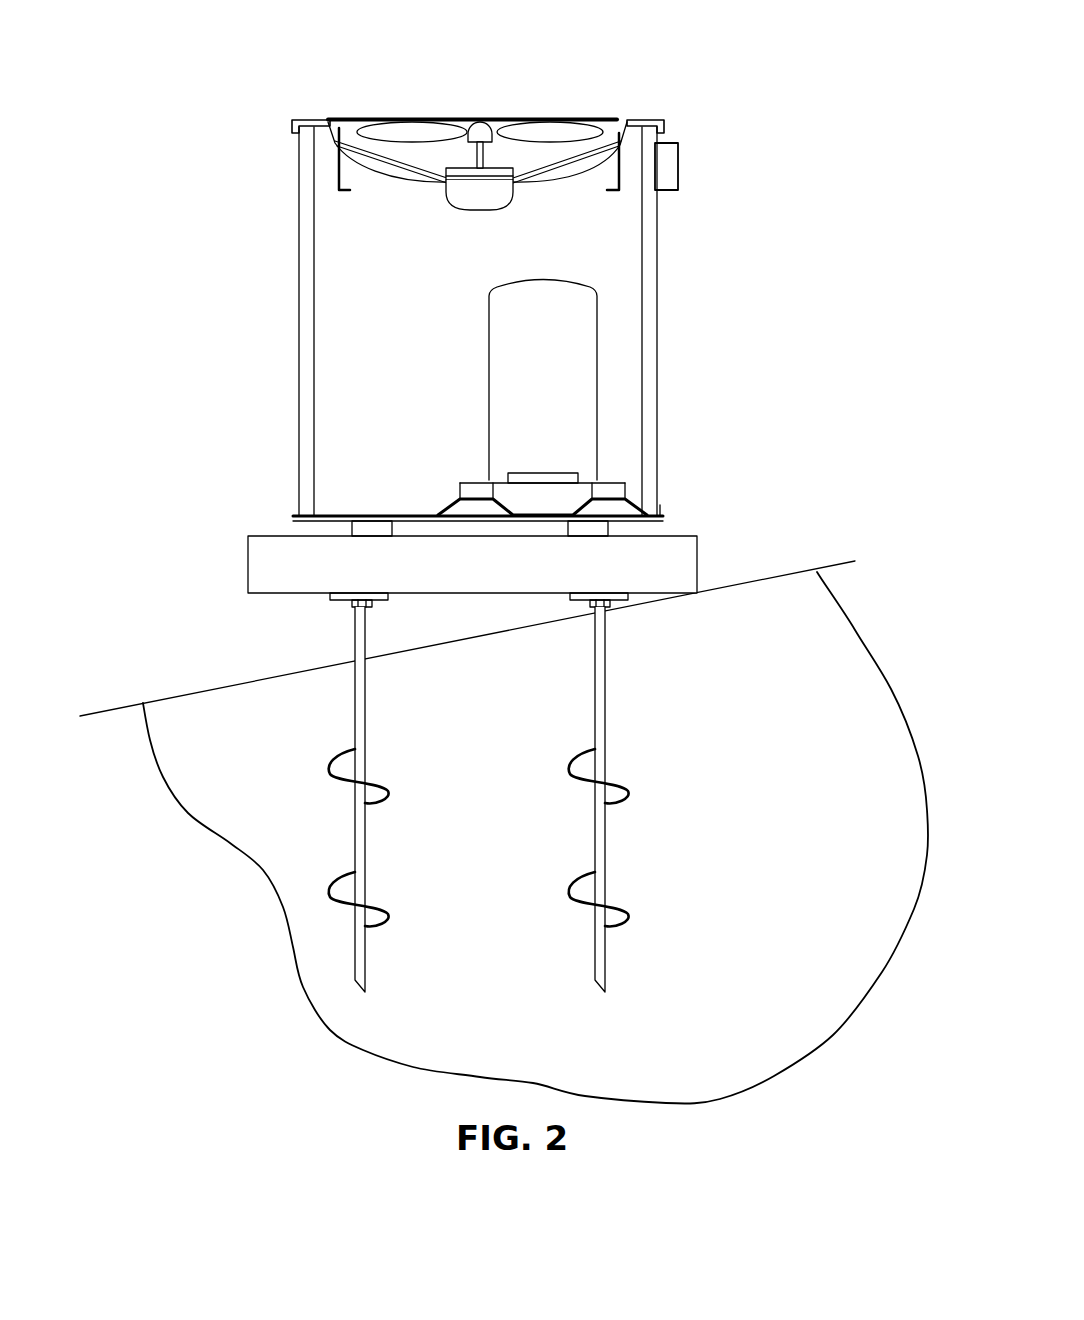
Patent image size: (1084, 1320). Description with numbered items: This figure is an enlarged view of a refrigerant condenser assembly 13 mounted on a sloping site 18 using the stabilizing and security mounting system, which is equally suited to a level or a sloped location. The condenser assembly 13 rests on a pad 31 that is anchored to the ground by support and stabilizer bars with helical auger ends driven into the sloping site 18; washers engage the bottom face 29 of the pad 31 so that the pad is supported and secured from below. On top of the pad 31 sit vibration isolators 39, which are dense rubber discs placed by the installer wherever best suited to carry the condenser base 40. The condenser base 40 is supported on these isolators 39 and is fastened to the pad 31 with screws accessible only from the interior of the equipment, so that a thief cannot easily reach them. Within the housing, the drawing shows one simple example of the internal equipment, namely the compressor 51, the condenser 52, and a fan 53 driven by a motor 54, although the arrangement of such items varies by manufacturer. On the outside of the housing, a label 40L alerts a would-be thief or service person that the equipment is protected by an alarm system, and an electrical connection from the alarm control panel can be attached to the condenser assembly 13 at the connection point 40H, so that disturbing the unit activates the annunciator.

The condenser assembly 13 is at (533, 265).
The sloping site 18 is at (767, 578).
The bottom face of the pad 29 is at (280, 595).
The pad 31 is at (283, 575).
The vibration isolators 39 is at (360, 532).
The condenser base 40 is at (293, 512).
The label 40L is at (653, 120).
The alarm connection point 40H is at (667, 170).
The compressor 51 is at (570, 330).
The condenser 52 is at (652, 322).
The fan 53 is at (428, 130).
The motor 54 is at (352, 138).